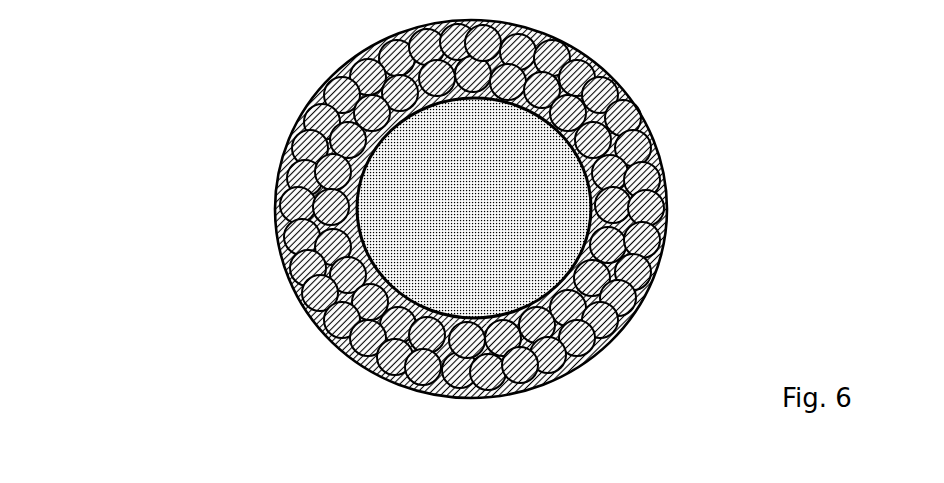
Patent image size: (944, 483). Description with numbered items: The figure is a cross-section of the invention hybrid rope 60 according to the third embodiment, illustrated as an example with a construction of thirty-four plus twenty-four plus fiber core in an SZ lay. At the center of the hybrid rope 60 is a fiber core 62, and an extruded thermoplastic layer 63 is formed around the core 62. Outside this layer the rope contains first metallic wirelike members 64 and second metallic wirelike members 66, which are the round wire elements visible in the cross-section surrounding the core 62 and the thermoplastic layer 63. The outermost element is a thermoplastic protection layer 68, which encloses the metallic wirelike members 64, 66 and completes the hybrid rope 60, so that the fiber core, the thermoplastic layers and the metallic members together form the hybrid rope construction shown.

The hybrid rope 60 is at (190, 86).
The fiber core 62 is at (383, 211).
The extruded thermoplastic layer 63 is at (360, 291).
The first metallic wirelike members 64 is at (603, 127).
The second metallic wirelike members 66 is at (602, 310).
The thermoplastic protection layer 68 is at (655, 258).